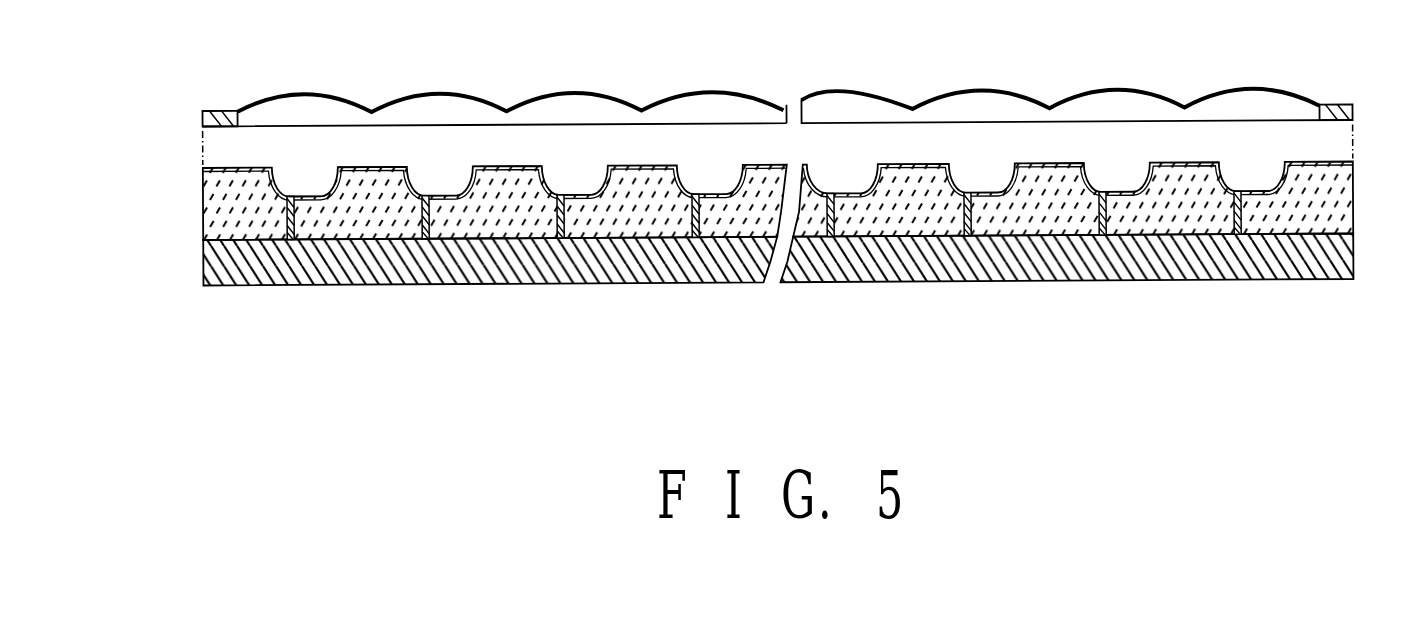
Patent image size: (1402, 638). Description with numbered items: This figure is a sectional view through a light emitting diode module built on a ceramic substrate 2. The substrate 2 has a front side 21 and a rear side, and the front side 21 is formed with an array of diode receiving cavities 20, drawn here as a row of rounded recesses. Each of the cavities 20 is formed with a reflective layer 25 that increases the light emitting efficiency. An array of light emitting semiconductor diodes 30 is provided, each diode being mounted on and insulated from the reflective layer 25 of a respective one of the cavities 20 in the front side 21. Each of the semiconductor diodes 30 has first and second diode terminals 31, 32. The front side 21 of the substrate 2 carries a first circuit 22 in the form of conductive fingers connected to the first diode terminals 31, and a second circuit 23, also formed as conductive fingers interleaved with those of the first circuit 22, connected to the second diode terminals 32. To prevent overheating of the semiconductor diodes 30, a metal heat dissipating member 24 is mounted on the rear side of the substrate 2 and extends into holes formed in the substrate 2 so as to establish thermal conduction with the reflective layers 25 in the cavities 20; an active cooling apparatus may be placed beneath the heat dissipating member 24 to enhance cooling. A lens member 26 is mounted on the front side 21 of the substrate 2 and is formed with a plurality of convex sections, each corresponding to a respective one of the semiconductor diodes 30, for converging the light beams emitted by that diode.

The ceramic substrate 2 is at (726, 185).
The diode receiving cavities 20 is at (327, 175).
The front side 21 is at (1307, 167).
The first circuit 22 is at (370, 168).
The second circuit 23 is at (502, 168).
The metal heat dissipating member 24 is at (1190, 273).
The reflective layer 25 is at (1284, 199).
The lens member 26 is at (597, 114).
The light emitting semiconductor diodes 30 is at (307, 197).
The first diode terminals 31 is at (412, 170).
The second diode terminals 32 is at (548, 182).